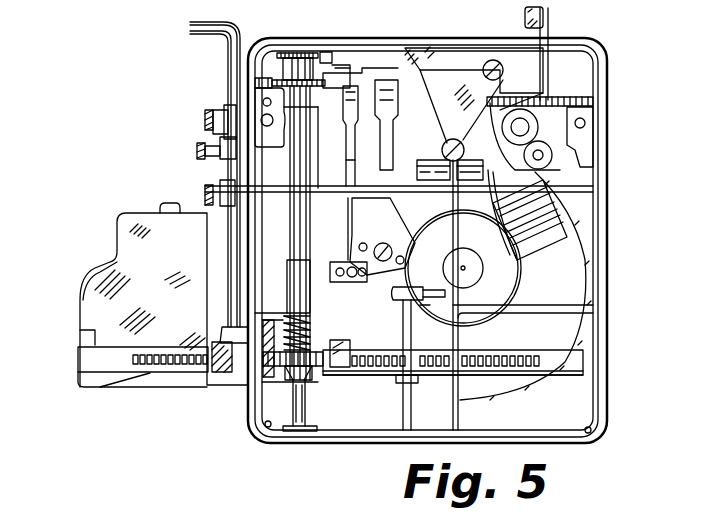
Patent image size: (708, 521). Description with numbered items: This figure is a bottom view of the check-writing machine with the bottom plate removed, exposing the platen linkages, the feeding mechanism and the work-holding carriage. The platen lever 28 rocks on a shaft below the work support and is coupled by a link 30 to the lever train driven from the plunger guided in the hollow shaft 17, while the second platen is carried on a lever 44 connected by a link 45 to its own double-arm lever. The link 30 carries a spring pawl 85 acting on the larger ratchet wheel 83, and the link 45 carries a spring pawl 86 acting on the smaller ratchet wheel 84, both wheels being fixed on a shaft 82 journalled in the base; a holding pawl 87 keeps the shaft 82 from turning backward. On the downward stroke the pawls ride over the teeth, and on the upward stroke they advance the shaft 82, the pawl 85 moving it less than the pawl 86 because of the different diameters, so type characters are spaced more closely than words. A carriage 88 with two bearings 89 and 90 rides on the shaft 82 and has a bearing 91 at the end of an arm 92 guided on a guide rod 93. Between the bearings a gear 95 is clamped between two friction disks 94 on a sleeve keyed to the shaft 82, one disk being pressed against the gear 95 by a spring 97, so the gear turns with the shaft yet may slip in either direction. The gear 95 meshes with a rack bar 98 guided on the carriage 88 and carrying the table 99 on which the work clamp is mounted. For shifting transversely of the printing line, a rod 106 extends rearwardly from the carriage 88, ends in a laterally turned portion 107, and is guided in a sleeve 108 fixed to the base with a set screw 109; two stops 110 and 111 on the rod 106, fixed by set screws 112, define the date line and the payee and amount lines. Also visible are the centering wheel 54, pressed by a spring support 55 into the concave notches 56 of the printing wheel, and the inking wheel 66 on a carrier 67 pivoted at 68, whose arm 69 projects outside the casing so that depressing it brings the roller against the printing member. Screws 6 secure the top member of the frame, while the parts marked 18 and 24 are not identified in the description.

The screws 6 is at (275, 50).
The hollow shaft 17 is at (312, 320).
The bracket 18 is at (342, 71).
The guide bar 24 is at (346, 168).
The two arm lever 28 is at (345, 132).
The link 30 is at (380, 78).
The lever 44 is at (386, 128).
The link 45 is at (495, 65).
The centering wheel 54 is at (552, 162).
The spring support 55 is at (543, 93).
The concave notches 56 is at (553, 190).
The inking wheel 66 is at (560, 220).
The carrier 67 is at (575, 135).
The pivot 68 is at (593, 88).
The arm 69 is at (555, 22).
The shaft 82 is at (230, 186).
The ratchet wheel 83 is at (352, 80).
The ratchet wheel 84 is at (307, 53).
The spring pawl 85 is at (330, 52).
The spring pawl 86 is at (336, 92).
The holding pawl 87 is at (265, 78).
The carriage 88 is at (220, 387).
The bearing 89 is at (293, 385).
The bearing 90 is at (285, 270).
The bearing 91 is at (400, 385).
The arm 92 is at (363, 375).
The guide rod 93 is at (418, 410).
The disks 94 is at (316, 375).
The gear 95 is at (262, 360).
The spring 97 is at (318, 300).
The rack bar 98 is at (185, 378).
The table 99 is at (80, 317).
The rod 106 is at (236, 100).
The laterally turned portion 107 is at (216, 182).
The sleeve 108 is at (220, 140).
The set screw 109 is at (197, 150).
The stop 110 is at (218, 110).
The stop 111 is at (222, 205).
The set screws 112 is at (200, 110).